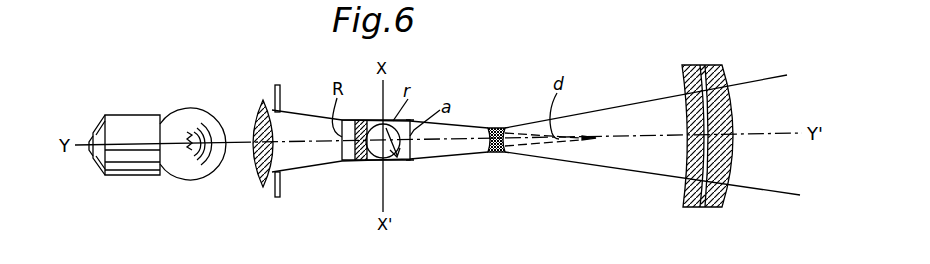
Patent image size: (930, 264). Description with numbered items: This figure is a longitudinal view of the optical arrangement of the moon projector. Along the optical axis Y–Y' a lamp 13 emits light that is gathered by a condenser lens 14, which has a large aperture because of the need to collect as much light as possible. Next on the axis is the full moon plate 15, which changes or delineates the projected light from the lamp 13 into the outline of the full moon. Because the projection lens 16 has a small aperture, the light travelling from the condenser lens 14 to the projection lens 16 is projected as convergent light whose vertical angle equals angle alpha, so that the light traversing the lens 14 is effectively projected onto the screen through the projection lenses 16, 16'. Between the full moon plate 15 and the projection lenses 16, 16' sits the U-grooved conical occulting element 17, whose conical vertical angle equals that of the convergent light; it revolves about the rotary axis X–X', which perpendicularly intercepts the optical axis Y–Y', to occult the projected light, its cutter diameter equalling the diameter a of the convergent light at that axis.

The lamp 13 is at (170, 167).
The condenser lens 14 is at (256, 174).
The full moon plate 15 is at (282, 195).
The projection lens 16 is at (491, 163).
The projection lens 16' is at (697, 157).
The U-grooved conical occulting element 17 is at (358, 163).